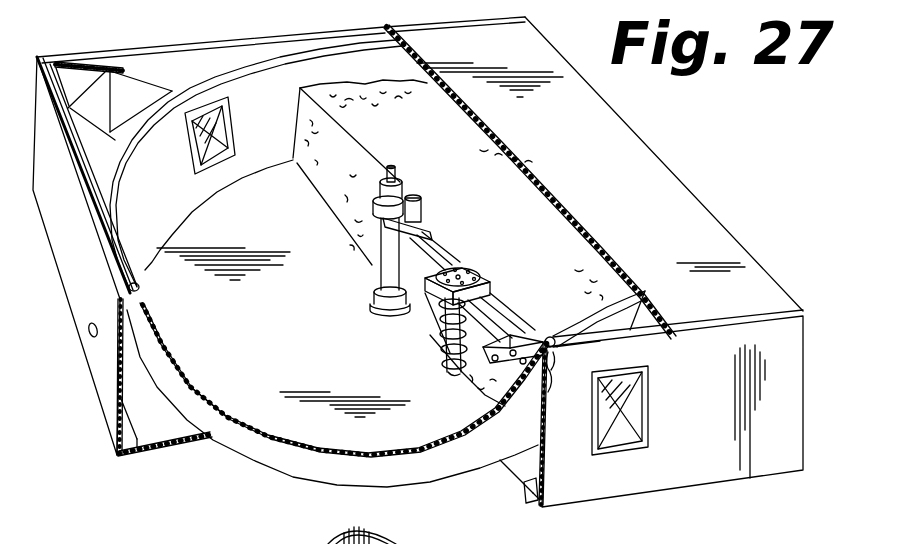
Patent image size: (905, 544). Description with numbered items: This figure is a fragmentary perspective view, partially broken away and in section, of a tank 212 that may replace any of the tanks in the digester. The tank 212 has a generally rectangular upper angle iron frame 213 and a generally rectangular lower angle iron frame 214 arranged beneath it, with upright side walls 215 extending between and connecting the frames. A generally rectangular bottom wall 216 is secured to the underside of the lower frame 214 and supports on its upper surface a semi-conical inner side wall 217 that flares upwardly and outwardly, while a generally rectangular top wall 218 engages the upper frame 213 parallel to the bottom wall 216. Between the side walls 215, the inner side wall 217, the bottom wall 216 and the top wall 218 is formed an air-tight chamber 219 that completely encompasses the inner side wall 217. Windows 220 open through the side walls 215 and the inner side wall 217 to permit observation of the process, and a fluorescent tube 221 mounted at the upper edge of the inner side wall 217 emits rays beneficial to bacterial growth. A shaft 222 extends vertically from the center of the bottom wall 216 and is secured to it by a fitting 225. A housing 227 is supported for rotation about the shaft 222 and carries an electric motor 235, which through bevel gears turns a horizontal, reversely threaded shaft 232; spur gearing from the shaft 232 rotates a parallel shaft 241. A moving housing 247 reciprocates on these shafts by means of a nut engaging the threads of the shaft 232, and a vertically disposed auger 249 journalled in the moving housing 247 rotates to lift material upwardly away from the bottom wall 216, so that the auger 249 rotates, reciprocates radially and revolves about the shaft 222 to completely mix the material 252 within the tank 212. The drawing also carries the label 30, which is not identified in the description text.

The tank 212 is at (590, 500).
The upper angle iron frame 213 is at (78, 155).
The lower angle iron frame 214 is at (148, 447).
The side walls 215 is at (100, 369).
The bottom wall 216 is at (167, 438).
The semi-conical inner side wall 217 is at (287, 455).
The top wall 218 is at (690, 193).
The chamber 219 is at (133, 397).
The windows 220 is at (230, 122).
The fluorescent tube 221 is at (628, 292).
The shaft 222 is at (381, 268).
The fitting 225 is at (392, 306).
The housing 227 is at (390, 230).
The shaft 232 is at (468, 257).
The electric motor 235 is at (415, 197).
The shaft 241 is at (443, 242).
The moving housing 247 is at (493, 283).
The auger 249 is at (438, 363).
The material 252 is at (313, 175).
The carriage and drive rod 30 is at (607, 345).